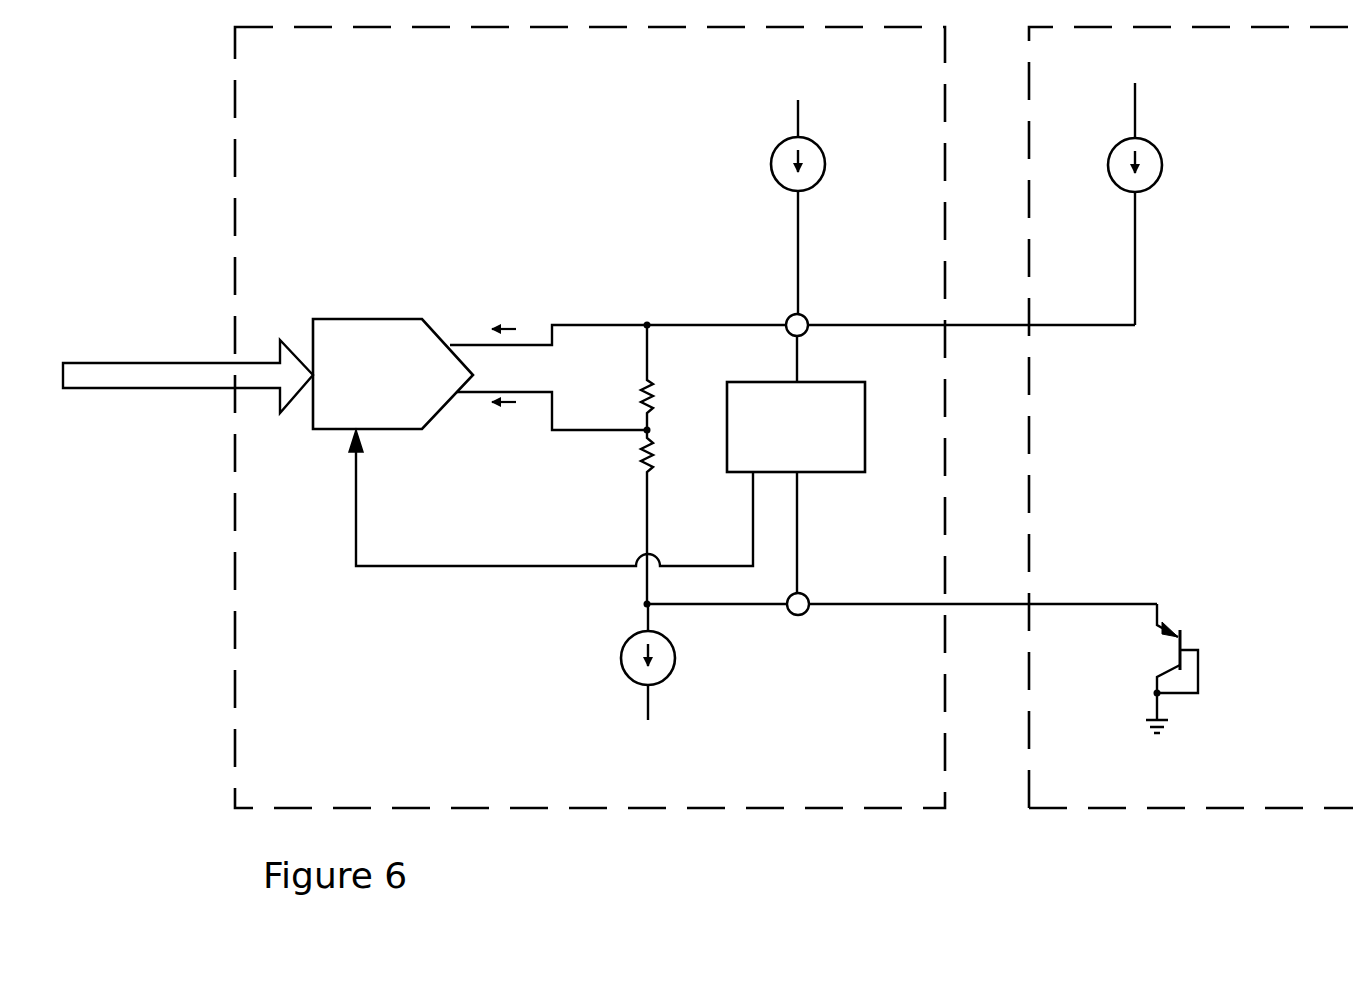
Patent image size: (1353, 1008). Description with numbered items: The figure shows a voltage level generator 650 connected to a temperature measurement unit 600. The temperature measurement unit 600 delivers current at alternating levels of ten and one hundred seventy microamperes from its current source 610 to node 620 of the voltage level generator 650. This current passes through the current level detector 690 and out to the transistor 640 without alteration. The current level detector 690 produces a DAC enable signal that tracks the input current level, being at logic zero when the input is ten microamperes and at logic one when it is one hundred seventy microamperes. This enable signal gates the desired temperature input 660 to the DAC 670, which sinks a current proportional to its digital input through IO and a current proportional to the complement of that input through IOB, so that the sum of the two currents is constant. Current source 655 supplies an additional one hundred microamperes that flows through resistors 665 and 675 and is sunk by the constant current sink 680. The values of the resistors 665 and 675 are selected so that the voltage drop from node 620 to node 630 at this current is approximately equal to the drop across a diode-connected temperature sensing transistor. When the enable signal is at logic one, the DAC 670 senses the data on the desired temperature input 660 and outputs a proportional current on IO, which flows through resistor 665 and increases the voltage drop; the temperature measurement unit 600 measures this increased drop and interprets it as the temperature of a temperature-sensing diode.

The temperature measurement unit 600 is at (1191, 417).
The current source 610 is at (1160, 155).
The node 620 is at (805, 315).
The node 630 is at (806, 594).
The transistor 640 is at (1172, 630).
The voltage level generator 650 is at (590, 417).
The current source 655 is at (815, 140).
The desired temperature input 660 is at (112, 363).
The resistor 665 is at (652, 385).
The DAC 670 is at (533, 442).
The resistor 675 is at (652, 470).
The constant current sink 680 is at (676, 650).
The current level detector 690 is at (796, 464).